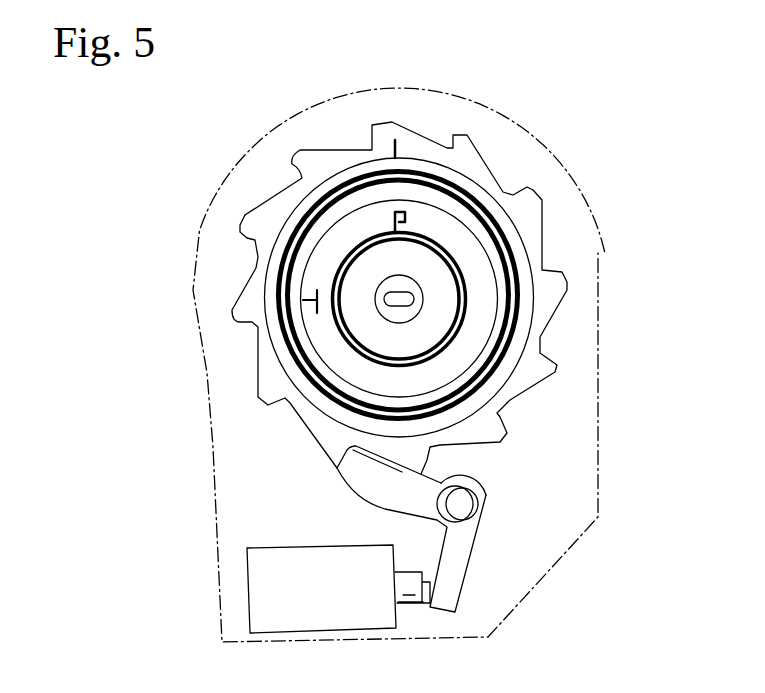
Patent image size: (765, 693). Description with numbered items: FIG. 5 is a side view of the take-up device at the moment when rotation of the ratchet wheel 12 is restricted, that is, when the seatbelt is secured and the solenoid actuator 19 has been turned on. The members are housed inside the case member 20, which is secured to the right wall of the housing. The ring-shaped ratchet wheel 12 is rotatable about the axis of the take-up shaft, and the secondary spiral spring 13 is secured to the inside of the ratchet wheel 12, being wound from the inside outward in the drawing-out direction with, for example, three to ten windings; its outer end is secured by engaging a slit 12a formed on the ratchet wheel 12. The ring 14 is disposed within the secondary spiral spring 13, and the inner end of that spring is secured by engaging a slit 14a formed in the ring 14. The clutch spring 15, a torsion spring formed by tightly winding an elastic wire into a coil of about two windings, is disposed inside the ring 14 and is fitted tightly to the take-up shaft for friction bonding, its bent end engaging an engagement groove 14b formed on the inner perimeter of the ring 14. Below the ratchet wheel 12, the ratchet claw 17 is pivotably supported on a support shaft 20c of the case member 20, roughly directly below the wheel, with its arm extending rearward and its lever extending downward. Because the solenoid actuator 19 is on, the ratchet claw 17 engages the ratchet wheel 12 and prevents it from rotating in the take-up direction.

The ratchet wheel 12 is at (368, 114).
The slit 12a is at (404, 138).
The secondary spiral spring 13 is at (288, 230).
The ring 14 is at (467, 237).
The slit 14a is at (310, 312).
The engagement groove 14b is at (407, 220).
The clutch spring 15 is at (455, 338).
The ratchet claw 17 is at (470, 569).
The solenoid actuator 19 is at (290, 567).
The case member 20 is at (600, 255).
The support shaft 20c is at (478, 508).